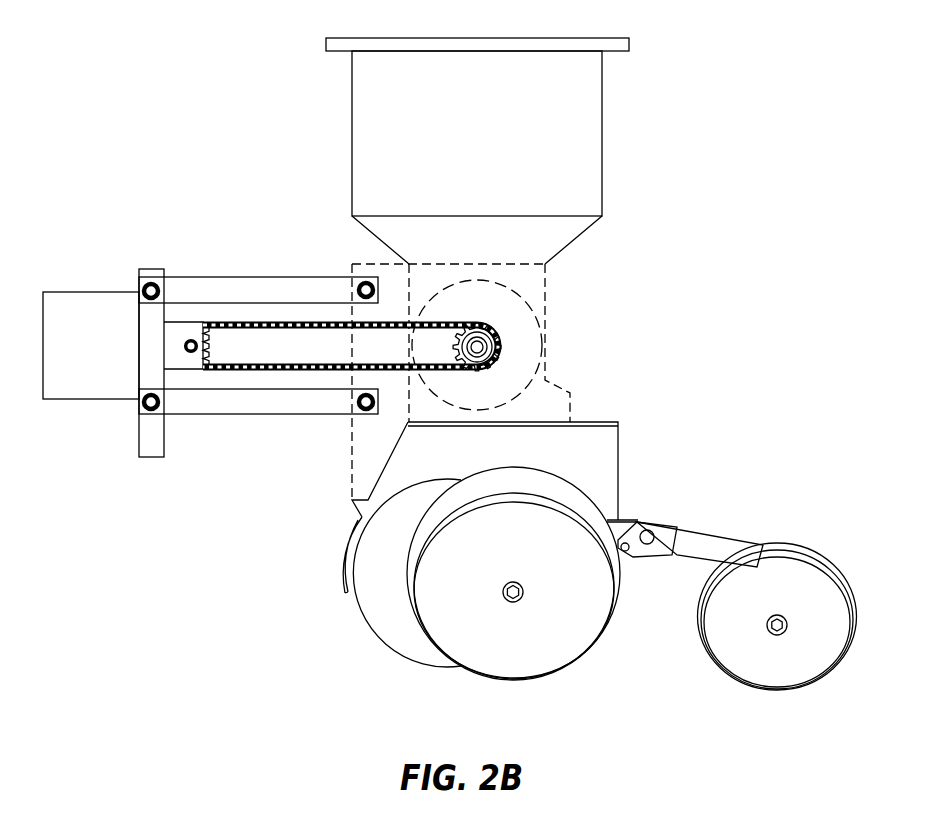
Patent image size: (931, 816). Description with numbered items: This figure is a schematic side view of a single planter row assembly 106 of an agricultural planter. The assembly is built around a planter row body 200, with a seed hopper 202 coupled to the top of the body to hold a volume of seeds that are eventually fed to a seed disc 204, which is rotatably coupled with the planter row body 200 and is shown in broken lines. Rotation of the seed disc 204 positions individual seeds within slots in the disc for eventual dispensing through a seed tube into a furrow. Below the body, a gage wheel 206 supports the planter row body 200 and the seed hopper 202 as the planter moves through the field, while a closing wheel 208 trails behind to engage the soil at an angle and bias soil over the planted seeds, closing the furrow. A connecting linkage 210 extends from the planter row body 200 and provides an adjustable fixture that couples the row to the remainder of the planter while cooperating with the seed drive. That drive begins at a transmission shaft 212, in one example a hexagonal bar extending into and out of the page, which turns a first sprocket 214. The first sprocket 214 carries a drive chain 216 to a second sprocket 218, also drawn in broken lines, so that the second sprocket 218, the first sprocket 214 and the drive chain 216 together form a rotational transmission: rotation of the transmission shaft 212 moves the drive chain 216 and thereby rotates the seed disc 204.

The planter row assembly 106 is at (772, 45).
The planter row body 200 is at (362, 461).
The seed hopper 202 is at (590, 137).
The seed disc 204 is at (533, 313).
The gage wheel 206 is at (490, 660).
The closing wheel 208 is at (743, 665).
The connecting linkage 210 is at (202, 405).
The transmission shaft 212 is at (185, 343).
The first sprocket 214 is at (212, 343).
The drive chain 216 is at (290, 372).
The second sprocket 218 is at (498, 360).